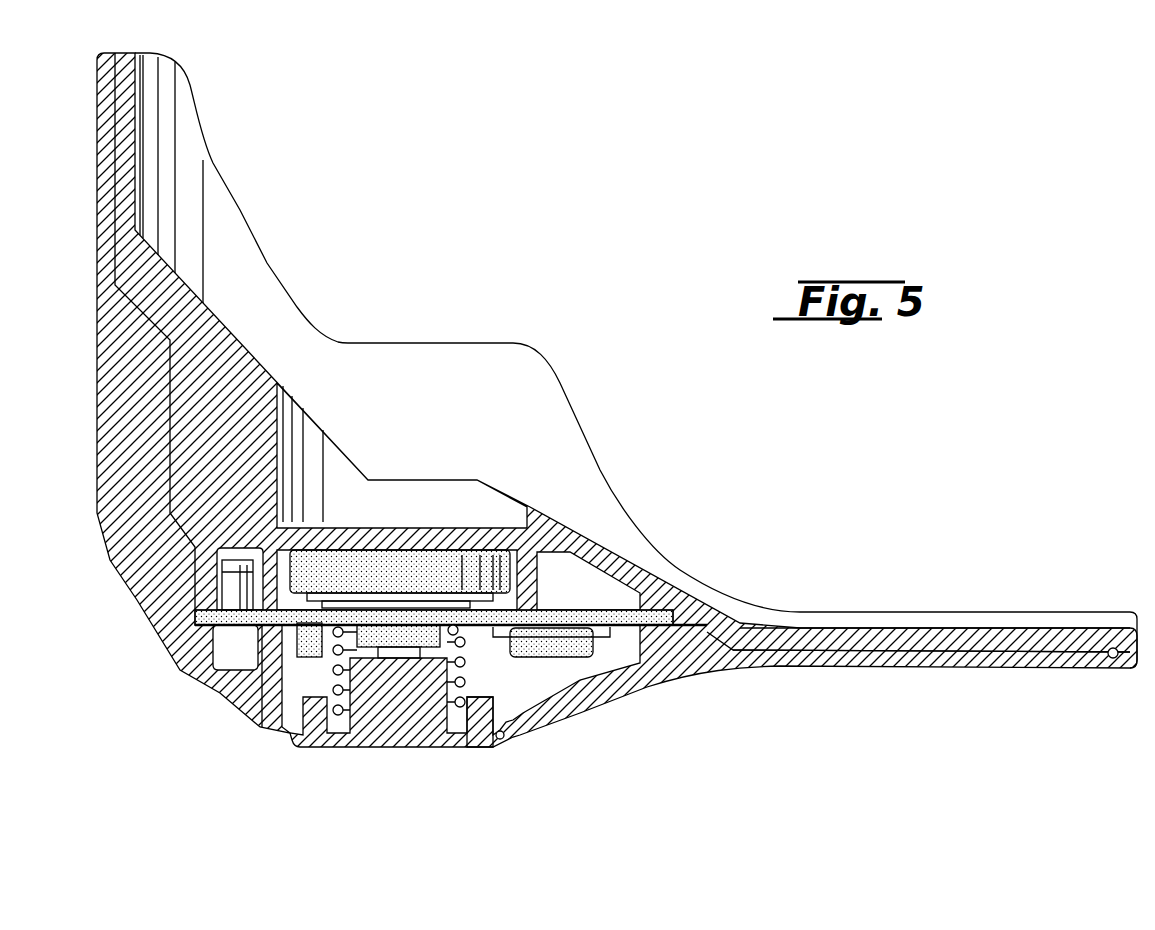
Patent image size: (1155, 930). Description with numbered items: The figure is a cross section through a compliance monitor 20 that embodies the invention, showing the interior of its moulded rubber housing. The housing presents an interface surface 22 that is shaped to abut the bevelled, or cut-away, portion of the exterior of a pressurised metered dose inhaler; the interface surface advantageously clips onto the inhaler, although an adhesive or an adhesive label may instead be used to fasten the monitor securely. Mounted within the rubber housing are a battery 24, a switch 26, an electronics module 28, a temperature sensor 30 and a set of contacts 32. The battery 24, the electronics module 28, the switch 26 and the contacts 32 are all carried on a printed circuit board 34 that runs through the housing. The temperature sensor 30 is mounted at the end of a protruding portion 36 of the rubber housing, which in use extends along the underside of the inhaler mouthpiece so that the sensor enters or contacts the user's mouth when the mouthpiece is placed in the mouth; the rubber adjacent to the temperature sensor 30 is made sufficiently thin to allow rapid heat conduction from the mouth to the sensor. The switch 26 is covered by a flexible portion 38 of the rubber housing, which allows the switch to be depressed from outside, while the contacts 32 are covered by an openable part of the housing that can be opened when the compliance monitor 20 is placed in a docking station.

The compliance monitor 20 is at (198, 112).
The interface surface 22 is at (473, 367).
The battery 24 is at (413, 570).
The switch 26 is at (393, 630).
The electronics module 28 is at (570, 640).
The temperature sensor 30 is at (1113, 660).
The set of contacts 32 is at (237, 650).
The printed circuit board 34 is at (589, 613).
The protruding portion 36 is at (985, 630).
The flexible portion 38 is at (453, 717).